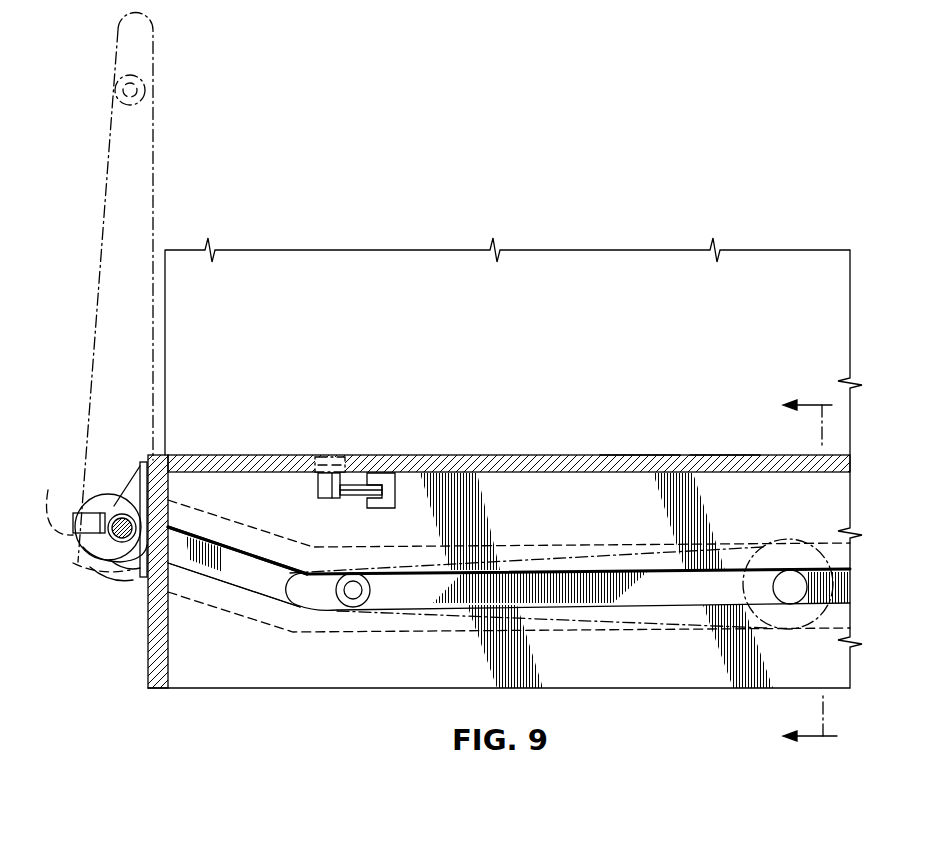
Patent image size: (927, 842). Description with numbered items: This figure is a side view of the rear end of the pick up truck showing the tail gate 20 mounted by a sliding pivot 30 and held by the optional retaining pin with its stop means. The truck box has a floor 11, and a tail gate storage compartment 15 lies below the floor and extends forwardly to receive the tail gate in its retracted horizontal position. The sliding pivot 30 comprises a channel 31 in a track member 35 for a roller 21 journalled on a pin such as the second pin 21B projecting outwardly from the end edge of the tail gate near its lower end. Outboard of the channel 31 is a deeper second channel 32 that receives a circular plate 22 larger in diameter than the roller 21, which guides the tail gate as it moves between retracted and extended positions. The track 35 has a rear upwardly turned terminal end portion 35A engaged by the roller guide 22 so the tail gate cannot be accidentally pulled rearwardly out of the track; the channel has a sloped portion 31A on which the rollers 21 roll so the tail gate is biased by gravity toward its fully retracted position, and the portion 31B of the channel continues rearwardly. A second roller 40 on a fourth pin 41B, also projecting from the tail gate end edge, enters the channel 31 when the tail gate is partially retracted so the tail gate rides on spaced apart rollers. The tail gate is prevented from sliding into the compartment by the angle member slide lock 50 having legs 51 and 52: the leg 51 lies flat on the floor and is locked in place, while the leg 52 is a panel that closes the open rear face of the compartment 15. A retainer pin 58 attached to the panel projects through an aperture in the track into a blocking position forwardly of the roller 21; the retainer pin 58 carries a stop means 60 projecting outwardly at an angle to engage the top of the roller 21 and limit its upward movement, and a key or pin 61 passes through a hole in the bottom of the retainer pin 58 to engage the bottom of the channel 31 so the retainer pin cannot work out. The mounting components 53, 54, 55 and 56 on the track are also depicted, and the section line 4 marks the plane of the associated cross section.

The section line 4- 4 is at (799, 573).
The floor 11 is at (630, 455).
The tail gate storage compartment 15 is at (717, 455).
The tail gate 20 is at (170, 241).
The roller 21 is at (115, 500).
The second pin 21B is at (107, 545).
The circular plate 22 is at (49, 498).
The sliding pivot 30 is at (221, 556).
The channel 31 is at (509, 656).
The channel sloped portion 31A is at (262, 583).
The link arm second portion 31B is at (640, 590).
The second channel 32 is at (228, 612).
The track member 35 is at (250, 536).
The rear upwardly turned terminal end portion 35A is at (118, 560).
The roller 40 is at (145, 82).
The fourth pin 41B is at (145, 100).
The angle member slide lock 50 is at (140, 676).
The leg 51 is at (247, 455).
The leg 52 is at (147, 628).
The mounting block 53 is at (325, 455).
The bracket 54 is at (357, 455).
The slide bar 55 is at (378, 455).
The retainer 56 is at (377, 498).
The retainer pin 58 is at (122, 498).
The stop means 60 is at (114, 500).
The key or pin 61 is at (143, 580).